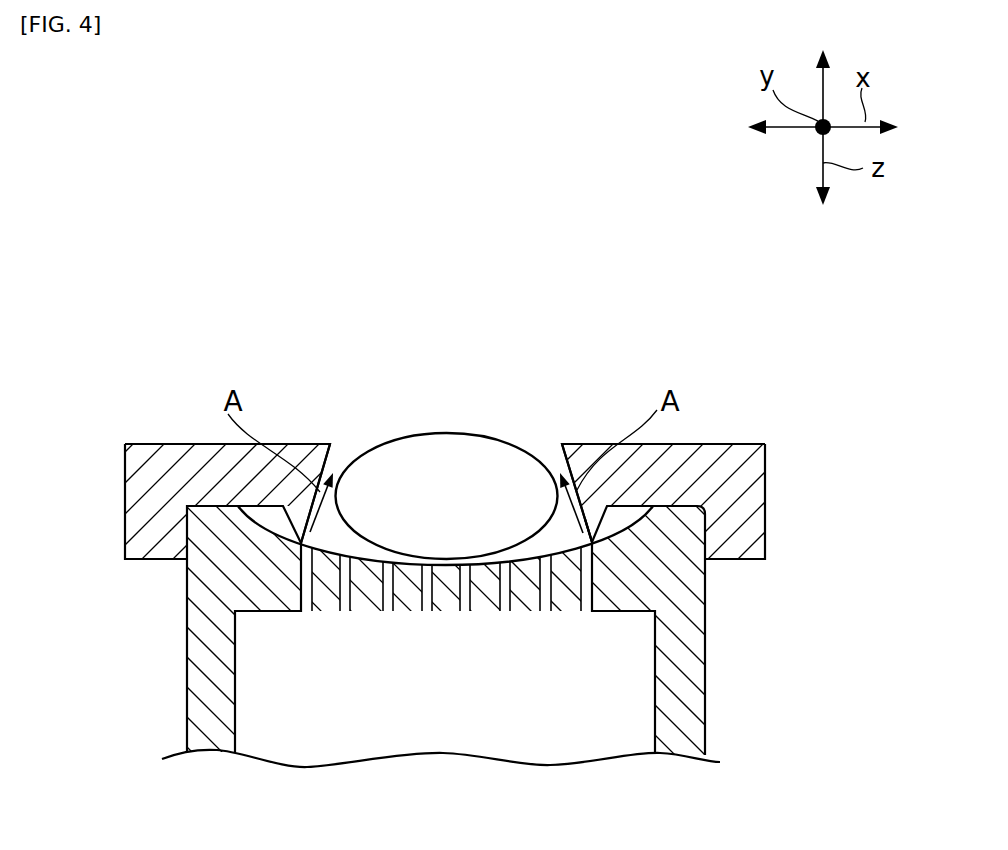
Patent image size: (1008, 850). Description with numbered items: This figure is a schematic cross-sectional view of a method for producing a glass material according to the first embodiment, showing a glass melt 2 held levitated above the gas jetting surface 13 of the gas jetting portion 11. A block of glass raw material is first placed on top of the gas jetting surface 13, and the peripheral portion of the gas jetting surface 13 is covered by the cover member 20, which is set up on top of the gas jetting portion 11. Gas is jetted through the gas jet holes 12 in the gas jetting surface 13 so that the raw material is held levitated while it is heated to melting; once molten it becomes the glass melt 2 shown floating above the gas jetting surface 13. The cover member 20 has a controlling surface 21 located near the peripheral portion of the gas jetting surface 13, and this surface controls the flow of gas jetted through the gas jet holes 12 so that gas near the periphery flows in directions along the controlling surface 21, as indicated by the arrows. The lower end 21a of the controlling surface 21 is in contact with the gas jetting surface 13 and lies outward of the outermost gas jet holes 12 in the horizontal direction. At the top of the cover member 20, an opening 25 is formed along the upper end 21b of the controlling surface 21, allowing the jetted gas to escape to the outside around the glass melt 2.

The glass melt 2 is at (407, 434).
The opening 25 is at (478, 426).
The cover member 20 is at (752, 443).
The controlling surface 21 is at (331, 447).
The upper end of the controlling surface 21b is at (562, 445).
The lower end of the controlling surface 21a is at (592, 543).
The gas jetting portion 11 is at (472, 663).
The gas jet holes 12 is at (306, 598).
The gas jetting surface 13 is at (443, 566).